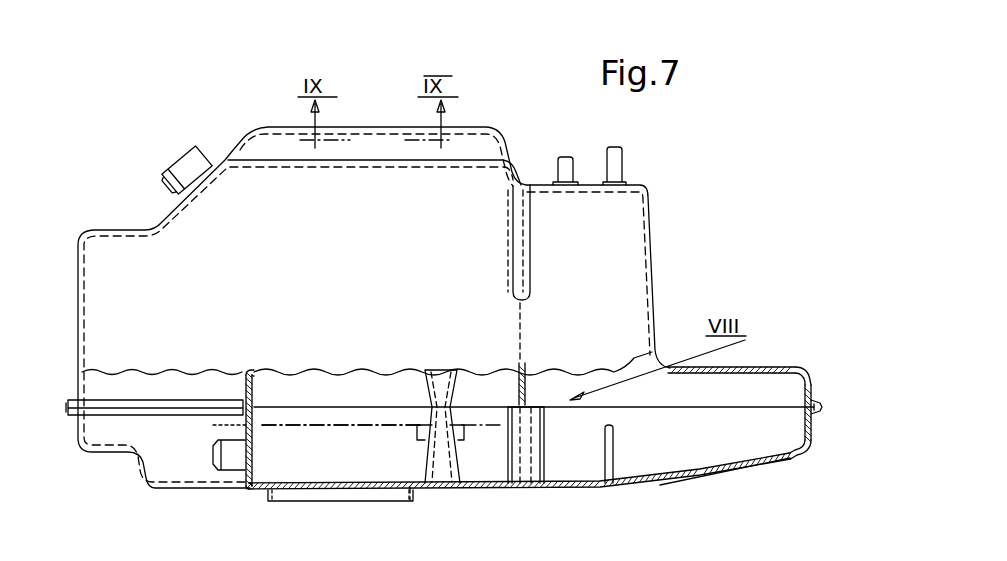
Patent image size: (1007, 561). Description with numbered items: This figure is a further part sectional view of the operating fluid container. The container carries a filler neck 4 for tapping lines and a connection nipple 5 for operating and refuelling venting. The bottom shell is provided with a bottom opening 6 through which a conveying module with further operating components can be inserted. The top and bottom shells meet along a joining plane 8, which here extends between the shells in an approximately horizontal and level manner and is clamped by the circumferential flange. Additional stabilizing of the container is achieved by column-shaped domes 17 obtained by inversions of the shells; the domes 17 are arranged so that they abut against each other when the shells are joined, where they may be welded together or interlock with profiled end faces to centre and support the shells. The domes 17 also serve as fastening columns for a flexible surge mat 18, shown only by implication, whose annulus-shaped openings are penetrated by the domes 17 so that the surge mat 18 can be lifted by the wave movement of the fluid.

The filler neck 4 is at (177, 155).
The connection nipple 5 is at (622, 163).
The bottom opening 6 is at (298, 492).
The joining plane 8 is at (726, 400).
The column-shaped domes 17 is at (438, 372).
The surge mat 18 is at (357, 423).